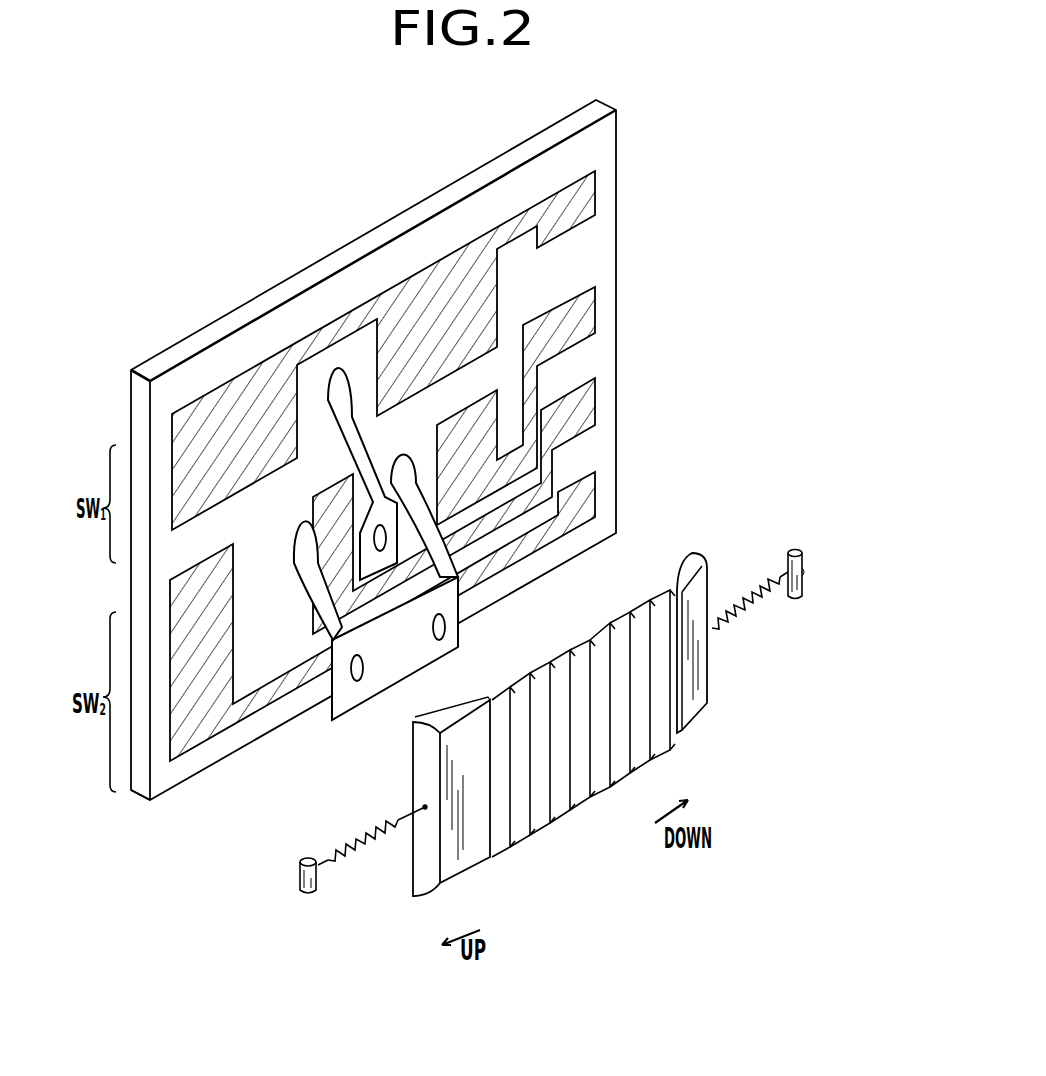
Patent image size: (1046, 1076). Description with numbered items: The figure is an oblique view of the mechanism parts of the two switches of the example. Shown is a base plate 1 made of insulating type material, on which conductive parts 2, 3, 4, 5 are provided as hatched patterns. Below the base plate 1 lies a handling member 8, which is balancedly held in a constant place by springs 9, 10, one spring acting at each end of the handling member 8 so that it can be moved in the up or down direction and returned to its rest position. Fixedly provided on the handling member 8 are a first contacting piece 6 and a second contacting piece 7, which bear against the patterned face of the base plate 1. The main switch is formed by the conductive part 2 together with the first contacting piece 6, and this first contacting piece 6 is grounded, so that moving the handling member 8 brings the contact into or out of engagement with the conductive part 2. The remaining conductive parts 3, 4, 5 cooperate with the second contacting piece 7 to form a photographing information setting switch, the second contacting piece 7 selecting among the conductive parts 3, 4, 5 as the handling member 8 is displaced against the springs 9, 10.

The base plate 1 is at (440, 204).
The conductive part 2 is at (586, 211).
The conductive part 3 is at (586, 332).
The conductive part 4 is at (583, 423).
The conductive part 5 is at (582, 513).
The first contacting piece 6 is at (339, 378).
The second contacting piece 7 is at (352, 692).
The handling member 8 is at (693, 703).
The spring 9 is at (762, 582).
The spring 10 is at (381, 851).